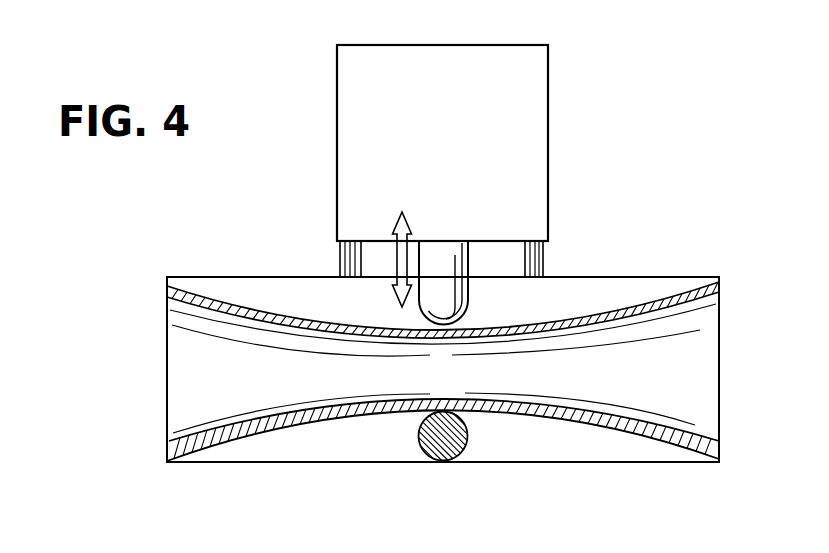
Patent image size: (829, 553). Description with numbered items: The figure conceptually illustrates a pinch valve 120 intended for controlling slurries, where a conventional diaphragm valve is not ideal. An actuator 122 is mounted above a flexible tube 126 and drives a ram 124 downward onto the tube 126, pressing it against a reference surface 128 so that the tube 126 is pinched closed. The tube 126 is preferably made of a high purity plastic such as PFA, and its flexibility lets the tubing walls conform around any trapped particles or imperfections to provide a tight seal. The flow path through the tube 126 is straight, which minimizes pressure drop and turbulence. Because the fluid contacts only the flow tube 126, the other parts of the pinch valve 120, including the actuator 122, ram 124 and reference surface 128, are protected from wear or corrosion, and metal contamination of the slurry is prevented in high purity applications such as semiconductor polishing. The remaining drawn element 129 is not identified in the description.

The lens deforming assembly 120 is at (610, 122).
The actuator 122 is at (336, 122).
The plunger 124 is at (470, 316).
The upper curved plate 126 is at (217, 310).
The pivot roller 128 is at (465, 440).
The lower curved plate 129 is at (438, 373).